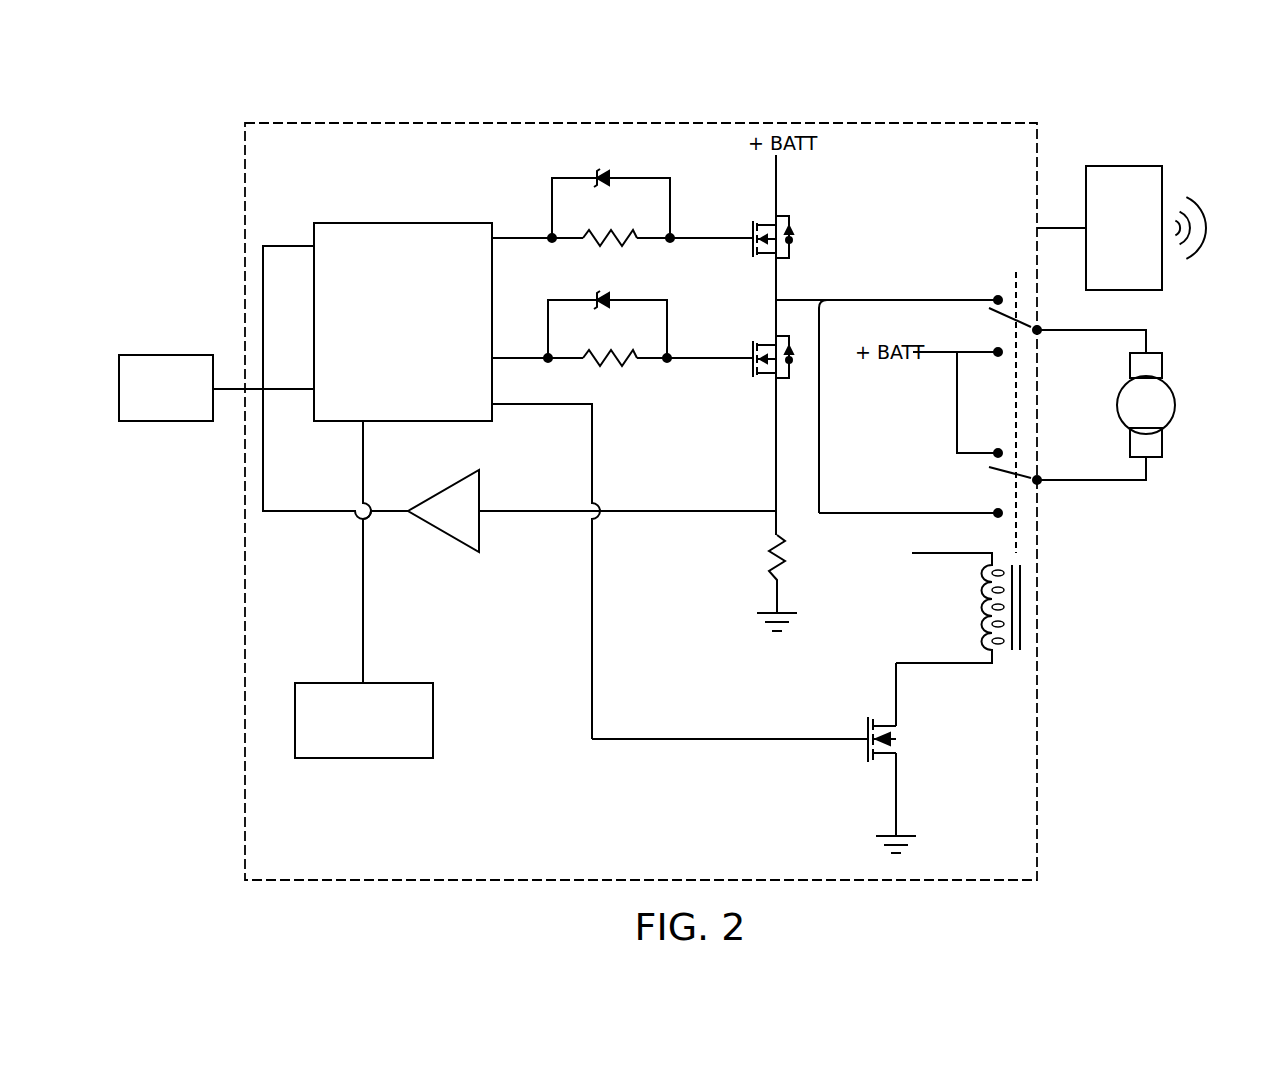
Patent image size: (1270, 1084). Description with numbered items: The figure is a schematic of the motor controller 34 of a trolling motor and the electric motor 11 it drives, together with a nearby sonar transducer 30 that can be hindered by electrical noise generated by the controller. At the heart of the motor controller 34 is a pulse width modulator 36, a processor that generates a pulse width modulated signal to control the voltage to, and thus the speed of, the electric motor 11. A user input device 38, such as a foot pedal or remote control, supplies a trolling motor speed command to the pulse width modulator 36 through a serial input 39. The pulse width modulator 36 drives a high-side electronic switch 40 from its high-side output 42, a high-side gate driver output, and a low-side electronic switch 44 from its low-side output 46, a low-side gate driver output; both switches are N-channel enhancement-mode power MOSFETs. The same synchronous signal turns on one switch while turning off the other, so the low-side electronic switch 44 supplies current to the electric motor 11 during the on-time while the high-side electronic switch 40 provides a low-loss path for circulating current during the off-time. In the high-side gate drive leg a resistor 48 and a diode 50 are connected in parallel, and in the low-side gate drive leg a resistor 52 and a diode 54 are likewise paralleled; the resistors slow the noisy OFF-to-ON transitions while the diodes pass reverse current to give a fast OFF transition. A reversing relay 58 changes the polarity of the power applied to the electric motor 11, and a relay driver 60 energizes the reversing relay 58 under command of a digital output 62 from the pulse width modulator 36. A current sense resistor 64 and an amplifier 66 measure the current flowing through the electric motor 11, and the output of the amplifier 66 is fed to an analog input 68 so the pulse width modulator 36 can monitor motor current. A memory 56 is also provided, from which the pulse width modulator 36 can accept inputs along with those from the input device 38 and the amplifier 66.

The electric motor 11 is at (1175, 405).
The sonar transducer 30 is at (1120, 166).
The motor controller 34 is at (415, 122).
The pulse width modulator 36 is at (403, 223).
The user input device 38 is at (165, 421).
The serial input 39 is at (314, 392).
The high-side electronic switch 40 is at (790, 222).
The high-side output 42 is at (497, 238).
The low-side electronic switch 44 is at (766, 380).
The low-side output 46 is at (497, 358).
The resistor 48 is at (632, 238).
The diode 50 is at (607, 178).
The resistor 52 is at (610, 362).
The diode 54 is at (607, 300).
The memory 56 is at (363, 758).
The reversing relay 58 is at (1016, 410).
The relay driver 60 is at (896, 745).
The digital output 62 is at (497, 406).
The current sense resistor 64 is at (777, 565).
The amplifier 66 is at (445, 530).
The analog input 68 is at (314, 244).